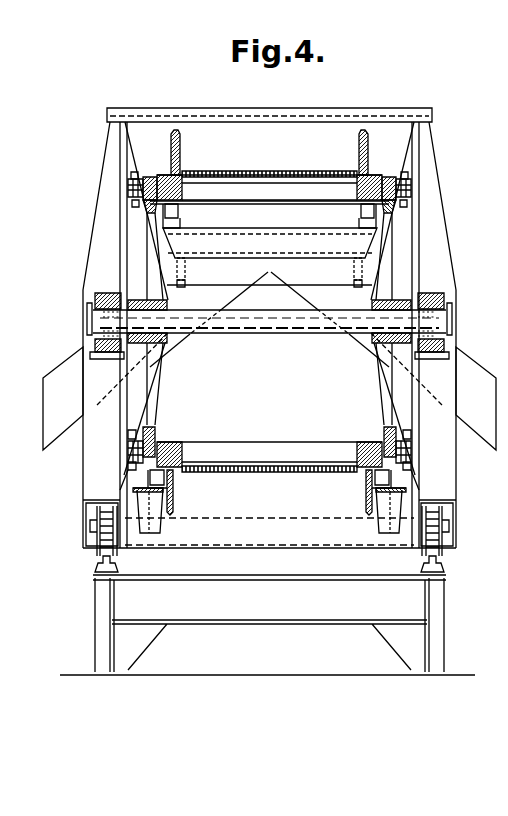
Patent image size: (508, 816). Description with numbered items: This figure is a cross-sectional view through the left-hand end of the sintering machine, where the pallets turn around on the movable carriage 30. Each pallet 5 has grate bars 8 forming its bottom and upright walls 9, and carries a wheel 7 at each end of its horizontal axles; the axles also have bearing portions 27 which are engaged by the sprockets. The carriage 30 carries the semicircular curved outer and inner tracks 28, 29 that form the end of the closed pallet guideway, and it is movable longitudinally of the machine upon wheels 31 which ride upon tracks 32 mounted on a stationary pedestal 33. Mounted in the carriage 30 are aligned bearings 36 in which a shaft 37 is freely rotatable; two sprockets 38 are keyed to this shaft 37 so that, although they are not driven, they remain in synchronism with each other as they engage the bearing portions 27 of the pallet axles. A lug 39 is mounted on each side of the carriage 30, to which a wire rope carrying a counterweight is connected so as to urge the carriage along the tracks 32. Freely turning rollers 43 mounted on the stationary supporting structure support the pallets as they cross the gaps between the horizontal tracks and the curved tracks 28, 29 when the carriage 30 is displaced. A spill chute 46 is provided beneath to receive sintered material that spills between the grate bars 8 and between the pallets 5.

The pallet 5 is at (254, 177).
The wheel 7 is at (128, 189).
The grate bars 8 is at (300, 175).
The upright walls 9 is at (180, 141).
The bearing portion 27 is at (150, 176).
The outer track 28 is at (131, 175).
The inner track 29 is at (130, 203).
The carriage 30 is at (92, 470).
The wheels 31 is at (103, 527).
The tracks 32 is at (103, 563).
The pedestal 33 is at (274, 615).
The bearings 36 is at (108, 298).
The shaft 37 is at (253, 334).
The sprockets 38 is at (152, 392).
The lug 39 is at (86, 318).
The rollers 43 is at (180, 210).
The spill chute 46 is at (50, 417).